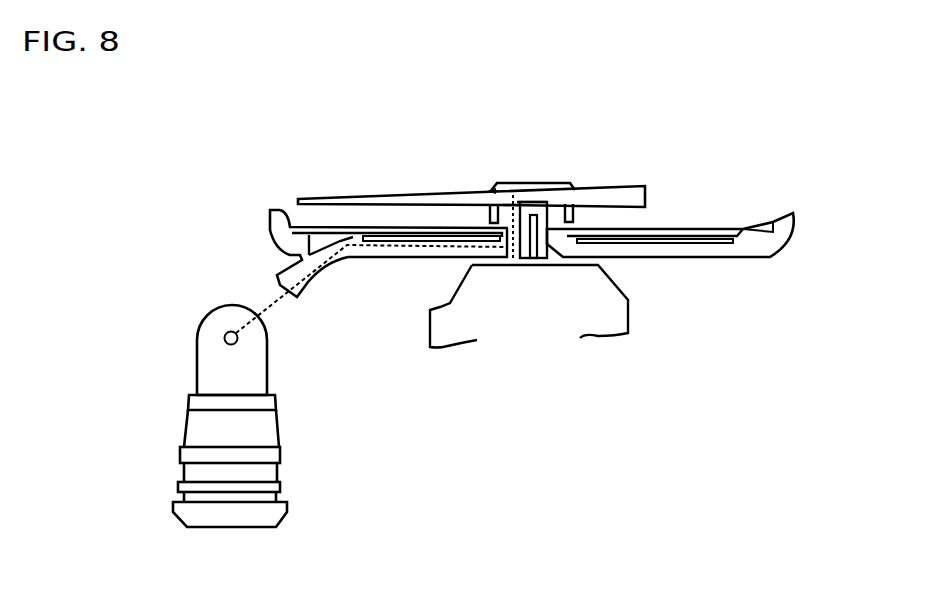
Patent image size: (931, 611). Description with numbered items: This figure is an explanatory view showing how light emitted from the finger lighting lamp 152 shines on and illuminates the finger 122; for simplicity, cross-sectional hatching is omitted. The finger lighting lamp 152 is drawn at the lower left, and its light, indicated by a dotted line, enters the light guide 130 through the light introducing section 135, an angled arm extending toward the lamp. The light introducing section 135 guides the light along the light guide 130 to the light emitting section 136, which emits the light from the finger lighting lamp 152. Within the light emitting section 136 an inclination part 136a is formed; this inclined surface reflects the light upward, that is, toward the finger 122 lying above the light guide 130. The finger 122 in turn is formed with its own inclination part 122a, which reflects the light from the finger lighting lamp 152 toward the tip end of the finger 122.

The finger 122 is at (412, 192).
The inclination part 122a is at (518, 193).
The light guide 130 is at (798, 213).
The light introducing section 135 is at (312, 285).
The light emitting section 136 is at (542, 206).
The inclination part 136a is at (512, 268).
The finger lighting lamp 152 is at (248, 373).